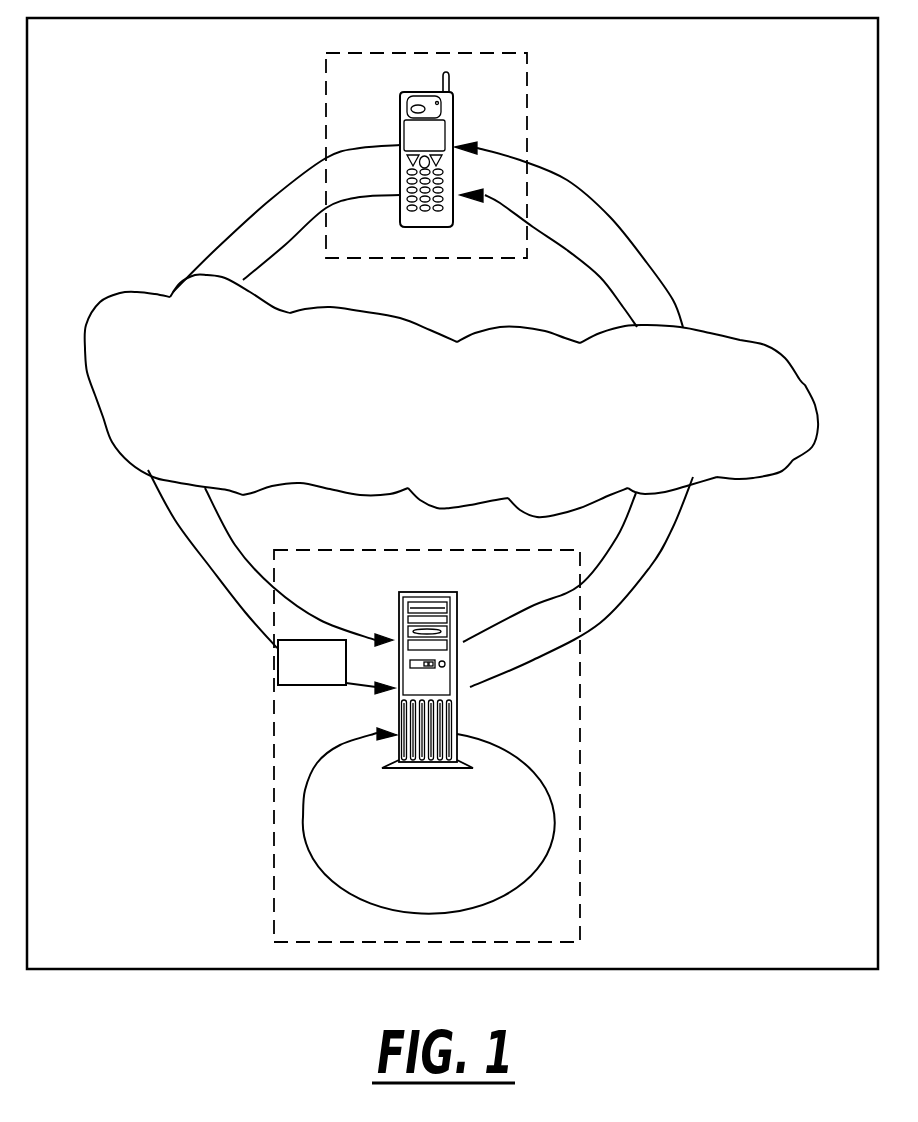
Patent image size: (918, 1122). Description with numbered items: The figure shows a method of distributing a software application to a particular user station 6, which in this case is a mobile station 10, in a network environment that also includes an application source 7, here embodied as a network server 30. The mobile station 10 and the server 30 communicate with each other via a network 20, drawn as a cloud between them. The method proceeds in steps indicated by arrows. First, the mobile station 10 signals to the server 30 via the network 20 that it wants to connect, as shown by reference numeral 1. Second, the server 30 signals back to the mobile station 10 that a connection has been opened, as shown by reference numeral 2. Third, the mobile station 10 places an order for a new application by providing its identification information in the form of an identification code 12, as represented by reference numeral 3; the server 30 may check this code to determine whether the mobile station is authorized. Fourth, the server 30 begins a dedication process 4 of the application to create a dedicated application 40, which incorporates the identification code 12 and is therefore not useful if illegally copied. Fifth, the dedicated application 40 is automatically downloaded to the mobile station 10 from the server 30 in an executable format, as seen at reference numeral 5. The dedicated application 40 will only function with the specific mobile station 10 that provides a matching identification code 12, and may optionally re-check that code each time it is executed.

The connection request signal 1 is at (350, 628).
The connection opened signal 2 is at (488, 197).
The application order signal 3 is at (348, 682).
The dedication process 4 is at (340, 748).
The download of dedicated application 5 is at (485, 148).
The user station 6 is at (528, 120).
The application source 7 is at (581, 818).
The mobile station 10 is at (455, 106).
The identification code 12 is at (312, 662).
The network 20 is at (767, 340).
The server 30 is at (458, 703).
The dedicated application 40 is at (553, 177).